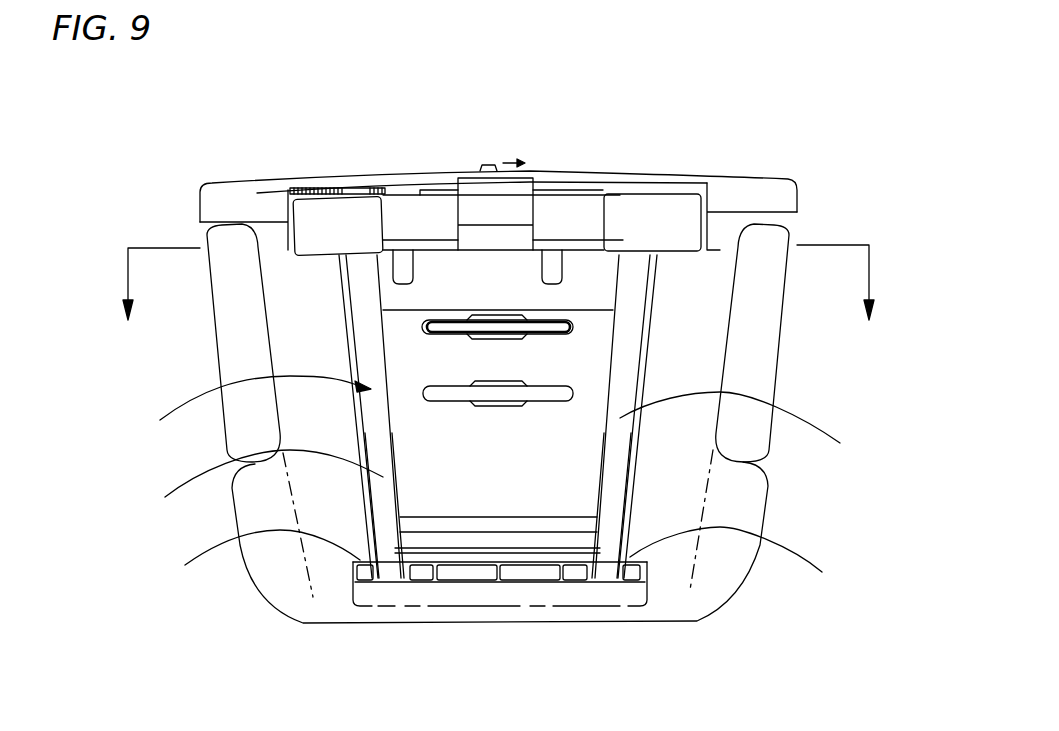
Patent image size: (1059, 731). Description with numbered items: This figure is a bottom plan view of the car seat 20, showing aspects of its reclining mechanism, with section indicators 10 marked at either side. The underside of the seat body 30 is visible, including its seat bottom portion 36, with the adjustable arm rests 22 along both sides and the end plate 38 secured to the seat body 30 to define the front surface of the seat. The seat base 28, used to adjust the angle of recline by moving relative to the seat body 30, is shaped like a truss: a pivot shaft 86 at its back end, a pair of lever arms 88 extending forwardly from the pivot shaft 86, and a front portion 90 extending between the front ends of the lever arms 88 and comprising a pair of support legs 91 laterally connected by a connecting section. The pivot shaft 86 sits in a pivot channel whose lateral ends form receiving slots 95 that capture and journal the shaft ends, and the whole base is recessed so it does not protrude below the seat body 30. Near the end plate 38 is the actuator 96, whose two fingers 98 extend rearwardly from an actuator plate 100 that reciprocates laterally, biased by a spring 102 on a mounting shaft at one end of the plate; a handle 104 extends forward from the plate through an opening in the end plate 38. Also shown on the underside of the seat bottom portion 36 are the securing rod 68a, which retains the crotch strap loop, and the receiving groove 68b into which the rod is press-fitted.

The section line of FIG. 10 is at (498, 303).
The car seat 20 is at (818, 132).
The arm rests 22 is at (253, 333).
The seat base 28 is at (446, 499).
The seat body 30 is at (326, 347).
The seat bottom portion 36 is at (438, 478).
The end plate 38 is at (257, 190).
The securing rod 68a is at (507, 322).
The receiving groove 68b is at (572, 322).
The pivot shaft 86 is at (463, 573).
The lever arms 88 is at (499, 457).
The front portion 90 is at (668, 190).
The support legs 91 is at (353, 240).
The receiving slots 95 is at (502, 560).
The actuator 96 is at (459, 132).
The fingers 98 is at (403, 262).
The actuator plate 100 is at (445, 185).
The spring 102 is at (313, 187).
The handle 104 is at (484, 163).